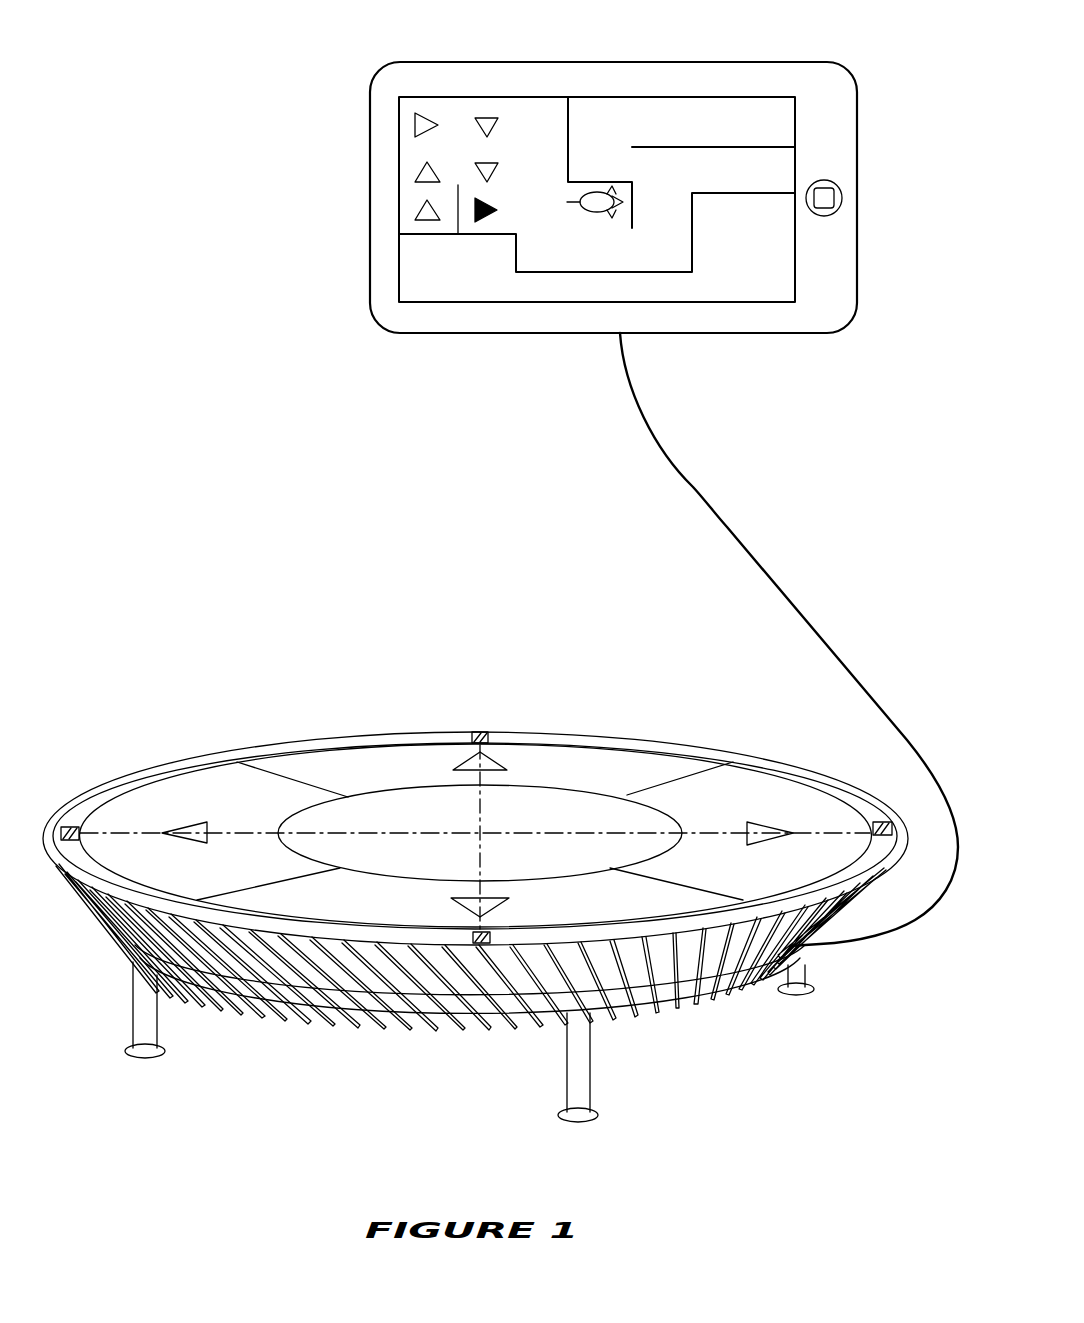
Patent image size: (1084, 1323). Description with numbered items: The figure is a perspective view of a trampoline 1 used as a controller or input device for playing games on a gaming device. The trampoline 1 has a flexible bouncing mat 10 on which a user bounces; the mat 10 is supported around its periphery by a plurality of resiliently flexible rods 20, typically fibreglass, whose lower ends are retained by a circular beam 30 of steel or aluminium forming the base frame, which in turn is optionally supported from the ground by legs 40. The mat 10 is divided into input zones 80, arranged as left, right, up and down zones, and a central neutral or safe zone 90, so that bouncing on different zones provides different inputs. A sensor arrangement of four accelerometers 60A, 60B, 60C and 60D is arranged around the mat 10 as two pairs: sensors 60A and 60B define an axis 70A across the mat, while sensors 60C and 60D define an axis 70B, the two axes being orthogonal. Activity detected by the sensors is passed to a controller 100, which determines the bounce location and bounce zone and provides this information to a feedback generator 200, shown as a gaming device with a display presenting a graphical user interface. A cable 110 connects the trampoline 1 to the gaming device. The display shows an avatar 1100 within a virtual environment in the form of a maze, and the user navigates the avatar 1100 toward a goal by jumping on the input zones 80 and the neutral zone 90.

The trampoline 1 is at (235, 650).
The flexible bouncing mat 10 is at (108, 878).
The resiliently flexible rods 20 is at (273, 960).
The circular beam 30 is at (350, 940).
The legs 40 is at (570, 1077).
The accelerometer sensor 60A is at (76, 827).
The accelerometer sensor 60B is at (876, 822).
The accelerometer sensor 60C is at (490, 731).
The accelerometer sensor 60D is at (473, 943).
The axis 70A is at (822, 832).
The axis 70B is at (472, 755).
The input zones 80 is at (357, 767).
The neutral zone 90 is at (648, 851).
The controller 100 is at (570, 193).
The cable 110 is at (727, 527).
The feedback generator 200 is at (627, 197).
The avatar 1100 is at (595, 185).